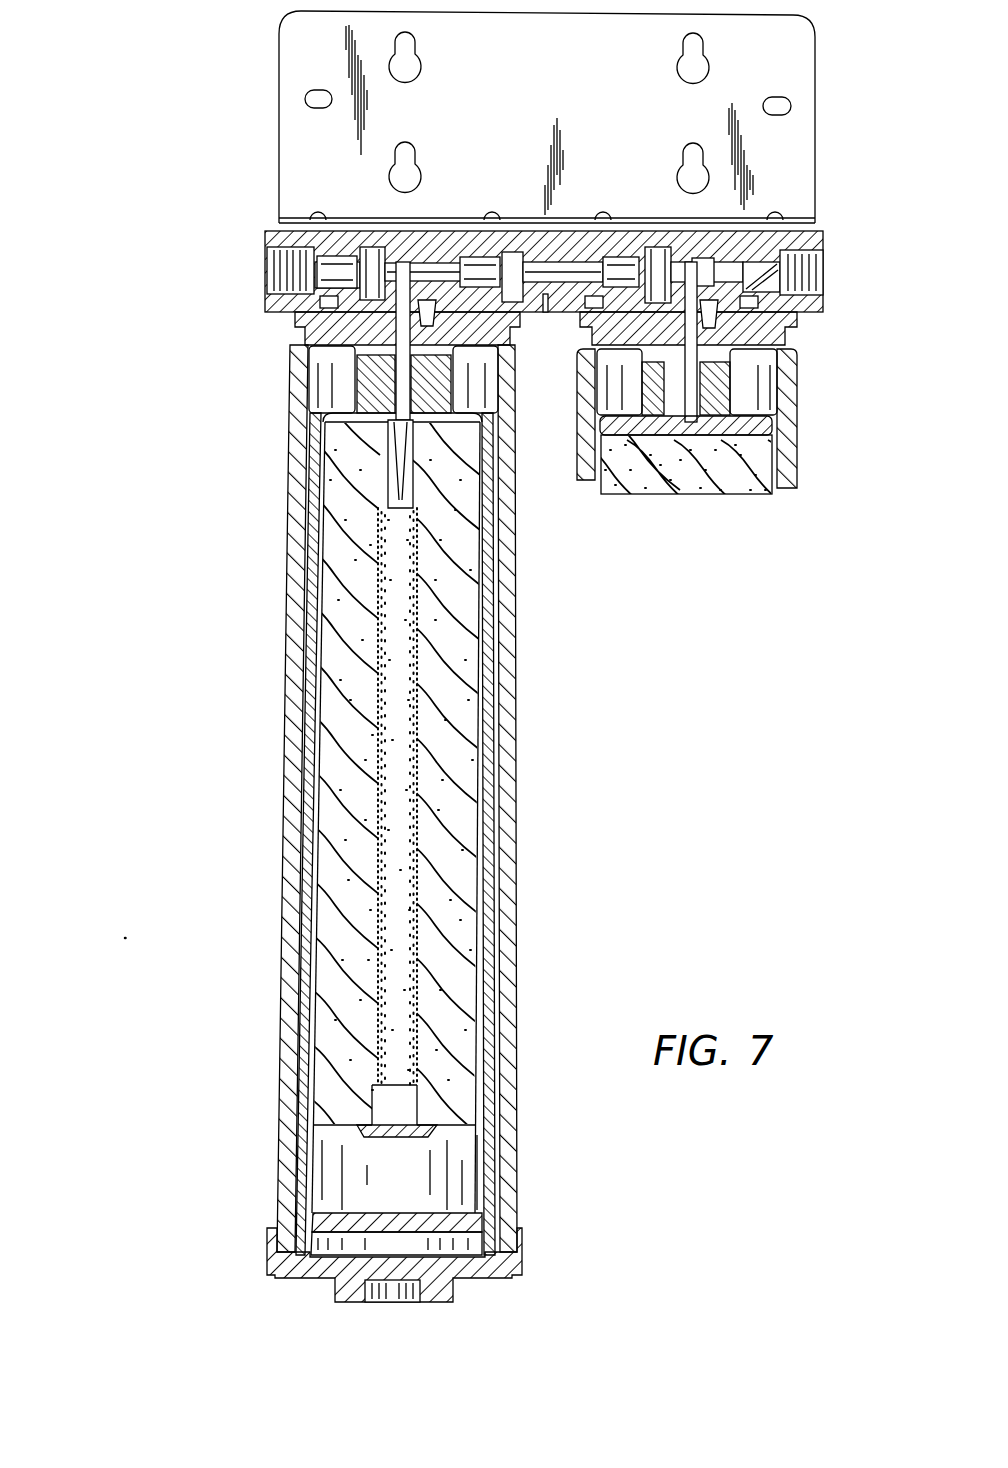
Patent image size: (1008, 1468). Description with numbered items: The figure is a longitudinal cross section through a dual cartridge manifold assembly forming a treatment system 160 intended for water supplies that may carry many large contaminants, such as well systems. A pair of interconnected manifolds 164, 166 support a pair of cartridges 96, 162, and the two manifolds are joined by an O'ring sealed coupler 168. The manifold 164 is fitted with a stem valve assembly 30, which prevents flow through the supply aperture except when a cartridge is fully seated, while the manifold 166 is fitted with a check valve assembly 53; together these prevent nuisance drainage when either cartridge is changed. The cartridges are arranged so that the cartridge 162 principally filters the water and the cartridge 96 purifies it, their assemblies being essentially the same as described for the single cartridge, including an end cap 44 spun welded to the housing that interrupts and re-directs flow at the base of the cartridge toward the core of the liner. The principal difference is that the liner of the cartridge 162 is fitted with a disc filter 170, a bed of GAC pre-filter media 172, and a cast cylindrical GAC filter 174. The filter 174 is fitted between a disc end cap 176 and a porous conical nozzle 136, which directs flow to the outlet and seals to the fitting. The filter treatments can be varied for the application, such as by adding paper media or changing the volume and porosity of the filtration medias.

The treatment system 160 is at (147, 225).
The manifold 164 is at (266, 246).
The manifold 166 is at (826, 307).
The O'ring sealed coupler 168 is at (545, 313).
The check valve assembly 53 is at (762, 261).
The stem valve assembly 30 is at (348, 358).
The cartridge 96 is at (798, 447).
The porous conical nozzle 136 is at (413, 490).
The cartridge 162 is at (285, 698).
The cast cylindrical GAC filter 174 is at (465, 870).
The disc end cap 176 is at (468, 1138).
The bed of GAC pre-filter media 172 is at (465, 1200).
The disc filter 170 is at (450, 1228).
The end cap 44 is at (435, 1302).